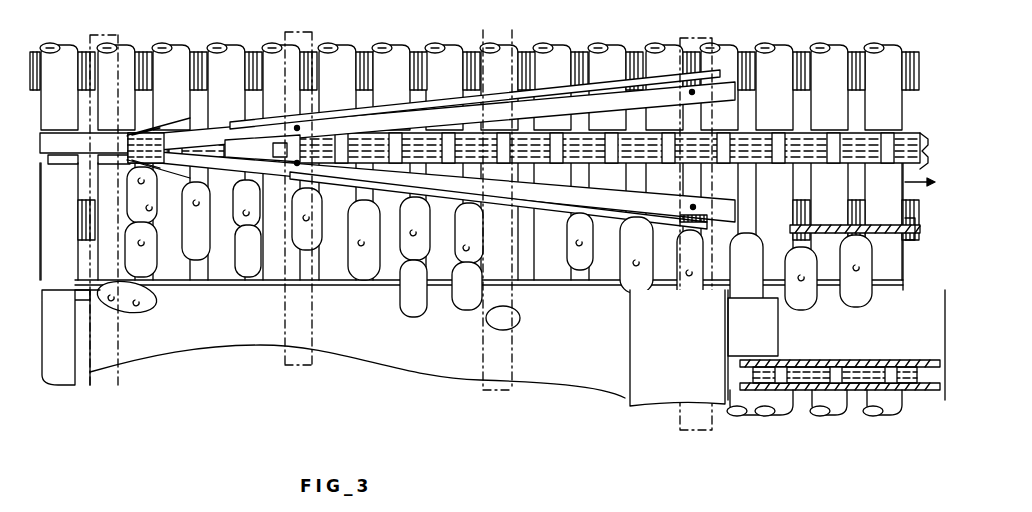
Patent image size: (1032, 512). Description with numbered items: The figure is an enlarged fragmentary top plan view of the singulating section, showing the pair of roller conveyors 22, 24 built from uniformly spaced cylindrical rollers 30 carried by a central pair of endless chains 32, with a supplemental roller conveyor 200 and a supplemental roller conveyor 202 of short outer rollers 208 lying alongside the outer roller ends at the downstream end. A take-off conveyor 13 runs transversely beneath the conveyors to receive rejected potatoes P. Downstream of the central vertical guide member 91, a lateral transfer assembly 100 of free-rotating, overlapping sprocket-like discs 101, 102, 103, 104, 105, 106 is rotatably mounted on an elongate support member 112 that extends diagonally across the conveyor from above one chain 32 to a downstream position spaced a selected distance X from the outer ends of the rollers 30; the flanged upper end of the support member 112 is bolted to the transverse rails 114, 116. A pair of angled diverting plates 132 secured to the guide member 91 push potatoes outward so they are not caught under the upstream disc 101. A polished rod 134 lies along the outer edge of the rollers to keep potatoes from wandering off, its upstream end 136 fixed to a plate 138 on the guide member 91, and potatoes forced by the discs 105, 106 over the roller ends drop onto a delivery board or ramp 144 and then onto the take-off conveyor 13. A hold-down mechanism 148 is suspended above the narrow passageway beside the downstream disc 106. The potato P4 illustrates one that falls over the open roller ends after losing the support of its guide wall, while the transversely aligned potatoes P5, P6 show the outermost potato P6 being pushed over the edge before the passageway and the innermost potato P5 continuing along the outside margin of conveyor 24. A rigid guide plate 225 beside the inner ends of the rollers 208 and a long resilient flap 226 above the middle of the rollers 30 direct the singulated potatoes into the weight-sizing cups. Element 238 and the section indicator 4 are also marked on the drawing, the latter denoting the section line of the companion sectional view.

The take-off conveyor 13 is at (167, 365).
The roller conveyor 22 is at (210, 42).
The roller conveyor 24 is at (225, 283).
The cylindrical rollers 30 is at (330, 82).
The endless chains 32 is at (765, 158).
The vertical guide member 91 is at (62, 135).
The lateral transfer assembly 100 is at (718, 80).
The upstream disc 101 is at (262, 75).
The disc 102 is at (338, 80).
The disc 103 is at (445, 85).
The disc 104 is at (525, 90).
The disc 105 is at (605, 75).
The downstream disc 106 is at (660, 75).
The support member 112 is at (662, 96).
The transverse rail 114 is at (285, 370).
The transverse rail 116 is at (712, 432).
The angled diverting plates 132 is at (178, 160).
The rod 134 is at (215, 287).
The upstream end of rod 136 is at (105, 310).
The plate 138 is at (72, 282).
The delivery board or ramp 144 is at (660, 402).
The hold-down mechanism 148 is at (668, 297).
The supplemental roller conveyor 200 is at (900, 76).
The supplemental roller conveyor 202 is at (855, 372).
The outer rollers 208 is at (738, 338).
The guide plate 225 is at (935, 345).
The resilient flap 226 is at (898, 240).
The chain 238 is at (930, 148).
The section 4- 4 is at (50, 290).
The potatoes P is at (145, 238).
The potato P4 is at (150, 308).
The innermost potato P5 is at (410, 235).
The outermost potato P6 is at (445, 330).
The selected distance X is at (718, 230).